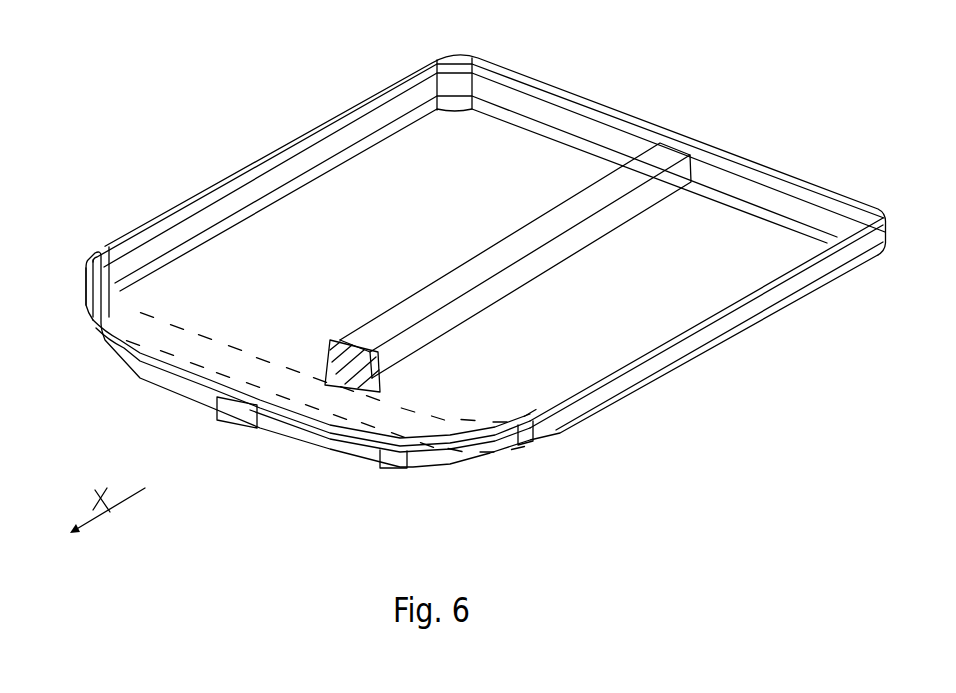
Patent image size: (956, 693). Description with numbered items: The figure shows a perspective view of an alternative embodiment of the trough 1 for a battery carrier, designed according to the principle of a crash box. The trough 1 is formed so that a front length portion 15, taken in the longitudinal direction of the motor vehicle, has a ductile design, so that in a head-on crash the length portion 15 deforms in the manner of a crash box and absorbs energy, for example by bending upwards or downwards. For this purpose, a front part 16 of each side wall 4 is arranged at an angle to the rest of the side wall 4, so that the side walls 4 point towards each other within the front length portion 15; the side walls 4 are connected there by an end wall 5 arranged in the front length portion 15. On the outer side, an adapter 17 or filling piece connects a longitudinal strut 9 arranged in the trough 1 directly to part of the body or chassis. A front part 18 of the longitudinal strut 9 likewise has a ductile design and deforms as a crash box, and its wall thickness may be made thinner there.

The trough 1 is at (277, 136).
The side wall 4 is at (208, 229).
The end wall 5 is at (271, 431).
The longitudinal strut 9 is at (587, 188).
The front length portion 15 is at (19, 306).
The front part of the side wall 16 is at (80, 315).
The adapter 17 is at (226, 419).
The front part of the longitudinal strut 18 is at (290, 366).